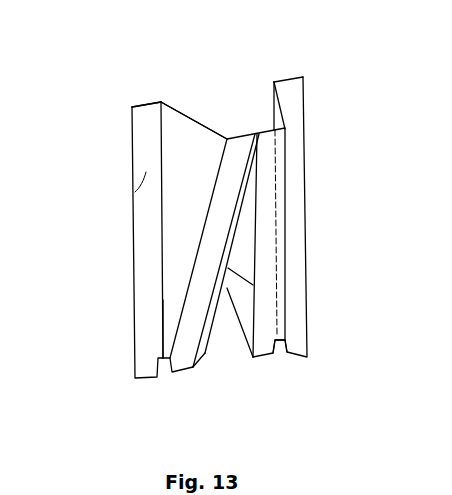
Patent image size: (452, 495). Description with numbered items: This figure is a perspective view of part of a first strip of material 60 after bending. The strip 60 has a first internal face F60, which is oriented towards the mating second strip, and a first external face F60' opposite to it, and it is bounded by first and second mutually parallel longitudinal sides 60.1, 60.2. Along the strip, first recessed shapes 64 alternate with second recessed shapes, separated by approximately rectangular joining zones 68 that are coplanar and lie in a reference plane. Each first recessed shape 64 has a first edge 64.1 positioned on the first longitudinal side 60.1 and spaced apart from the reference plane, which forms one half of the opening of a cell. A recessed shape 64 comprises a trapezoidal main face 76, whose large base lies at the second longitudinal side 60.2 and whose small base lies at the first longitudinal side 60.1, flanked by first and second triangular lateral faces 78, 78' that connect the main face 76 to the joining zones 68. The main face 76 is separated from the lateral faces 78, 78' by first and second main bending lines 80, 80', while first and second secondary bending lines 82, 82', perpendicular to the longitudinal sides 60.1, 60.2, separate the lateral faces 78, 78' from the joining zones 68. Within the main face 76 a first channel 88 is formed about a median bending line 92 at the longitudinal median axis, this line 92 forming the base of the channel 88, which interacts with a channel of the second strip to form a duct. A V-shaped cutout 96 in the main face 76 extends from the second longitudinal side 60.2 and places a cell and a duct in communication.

The first strip of material 60 is at (123, 133).
The first longitudinal side 60.1 is at (290, 79).
The second longitudinal side 60.2 is at (289, 352).
The first internal face F60 is at (98, 100).
The first external face F60' is at (88, 181).
The first recessed shape 64 is at (216, 97).
The first edge 64.1 is at (187, 114).
The joining zone 68 is at (126, 343).
The main face 76 is at (195, 317).
The first triangular lateral face 78 is at (123, 285).
The second triangular lateral face 78' is at (318, 106).
The first main bending line 80 is at (137, 248).
The second main bending line 80' is at (323, 234).
The first secondary bending line 82 is at (108, 230).
The second secondary bending line 82' is at (282, 71).
The first channel 88 is at (226, 327).
The median bending line 92 is at (252, 285).
The cutout 96 is at (206, 328).